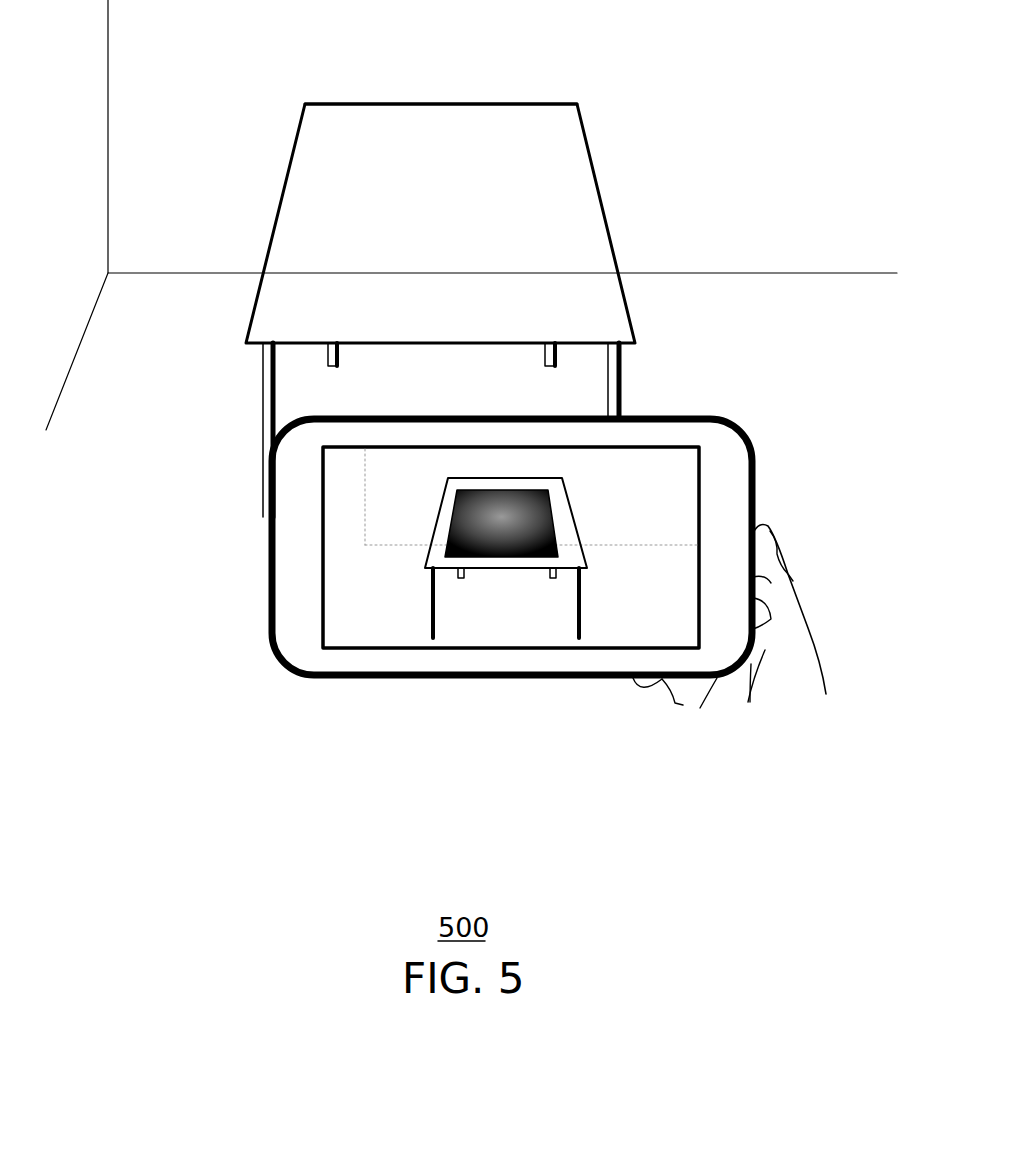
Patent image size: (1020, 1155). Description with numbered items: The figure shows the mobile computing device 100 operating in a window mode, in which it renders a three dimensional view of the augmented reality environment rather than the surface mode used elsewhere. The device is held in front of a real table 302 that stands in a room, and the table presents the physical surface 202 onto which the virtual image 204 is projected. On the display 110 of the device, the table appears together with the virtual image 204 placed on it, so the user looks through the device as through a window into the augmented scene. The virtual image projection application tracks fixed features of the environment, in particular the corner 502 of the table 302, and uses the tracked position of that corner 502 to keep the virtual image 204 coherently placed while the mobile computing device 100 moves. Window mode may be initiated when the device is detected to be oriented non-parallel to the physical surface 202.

The mobile computing device 100 is at (267, 548).
The display 110 is at (322, 597).
The physical surface 202 is at (571, 137).
The virtual image 204 is at (550, 513).
The table 302 is at (472, 103).
The corner 502 is at (425, 568).